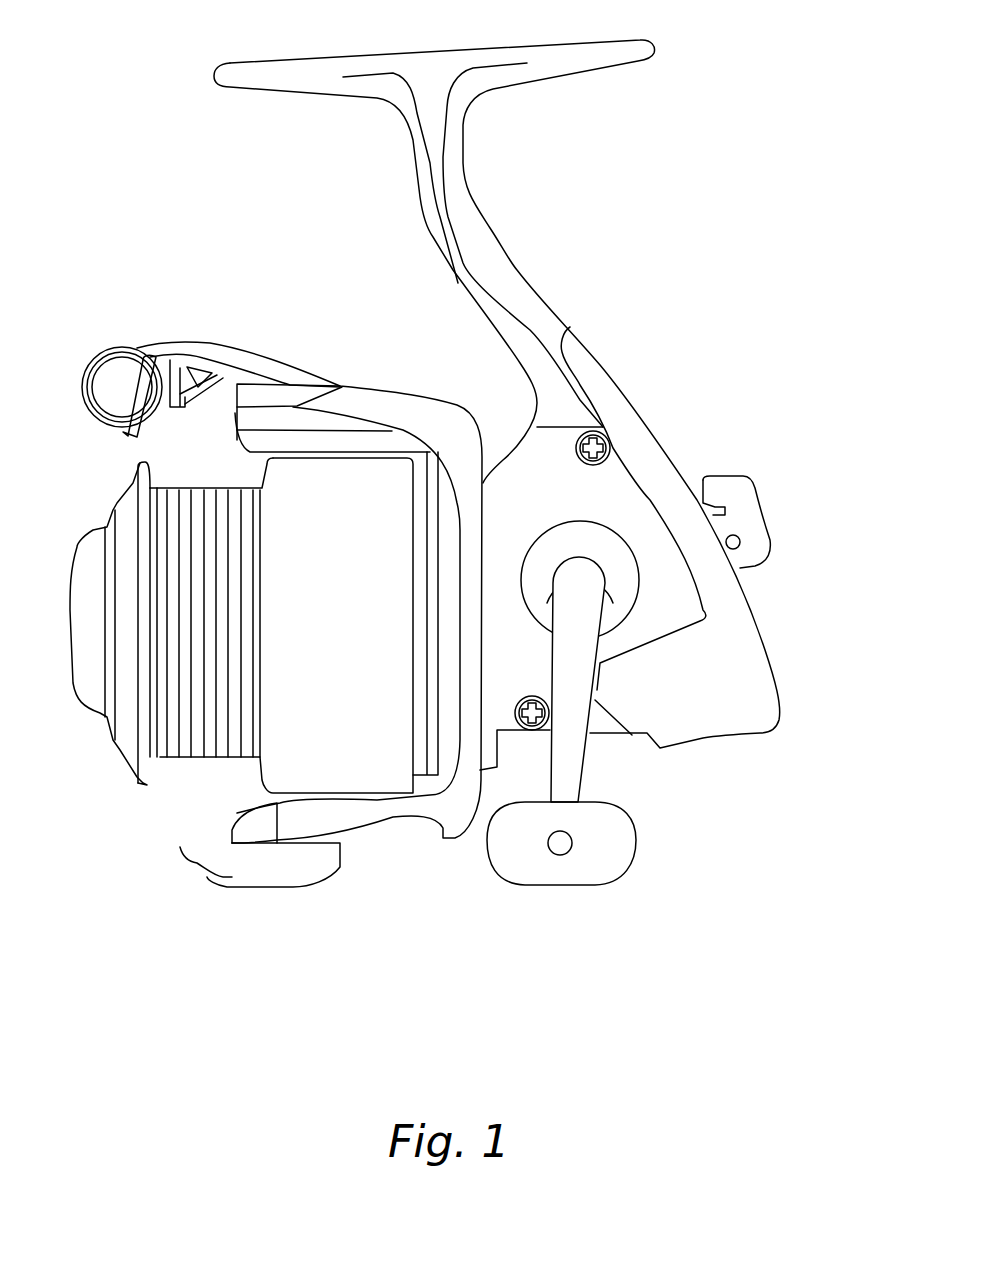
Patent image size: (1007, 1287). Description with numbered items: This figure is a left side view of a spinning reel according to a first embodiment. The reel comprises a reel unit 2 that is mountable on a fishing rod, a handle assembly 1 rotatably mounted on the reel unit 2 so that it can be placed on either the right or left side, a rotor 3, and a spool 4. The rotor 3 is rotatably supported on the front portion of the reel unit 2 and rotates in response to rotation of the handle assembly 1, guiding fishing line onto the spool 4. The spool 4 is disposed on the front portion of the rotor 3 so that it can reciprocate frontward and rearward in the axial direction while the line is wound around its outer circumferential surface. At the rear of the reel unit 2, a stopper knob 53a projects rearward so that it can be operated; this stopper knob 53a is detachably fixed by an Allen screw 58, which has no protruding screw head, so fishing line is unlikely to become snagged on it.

The handle assembly 1 is at (587, 773).
The reel unit 2 is at (549, 288).
The rotor 3 is at (438, 810).
The spool 4 is at (187, 745).
The stopper knob 53a is at (720, 480).
The Allen screw 58 is at (740, 538).